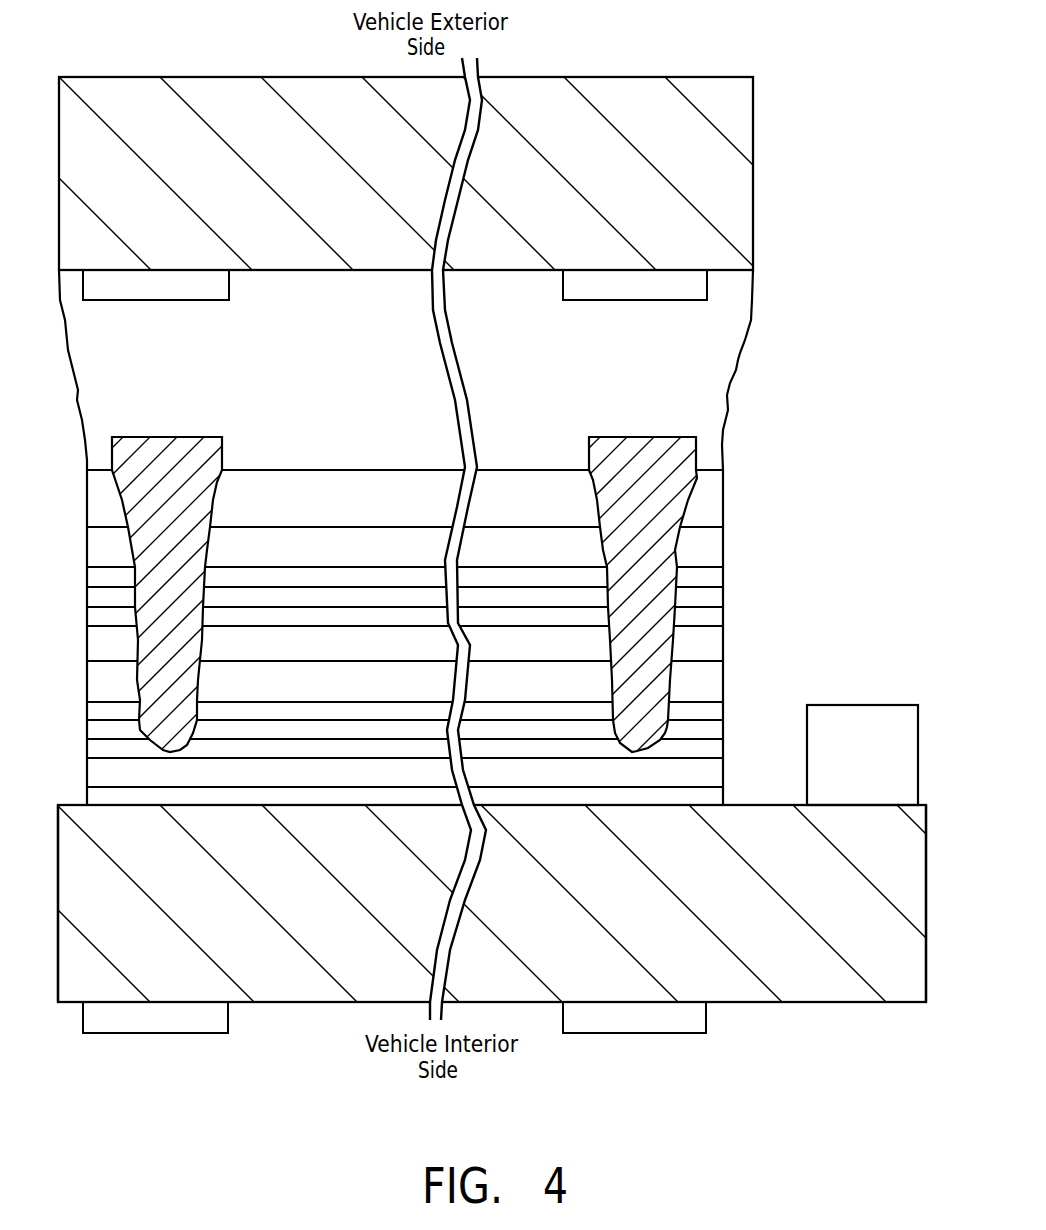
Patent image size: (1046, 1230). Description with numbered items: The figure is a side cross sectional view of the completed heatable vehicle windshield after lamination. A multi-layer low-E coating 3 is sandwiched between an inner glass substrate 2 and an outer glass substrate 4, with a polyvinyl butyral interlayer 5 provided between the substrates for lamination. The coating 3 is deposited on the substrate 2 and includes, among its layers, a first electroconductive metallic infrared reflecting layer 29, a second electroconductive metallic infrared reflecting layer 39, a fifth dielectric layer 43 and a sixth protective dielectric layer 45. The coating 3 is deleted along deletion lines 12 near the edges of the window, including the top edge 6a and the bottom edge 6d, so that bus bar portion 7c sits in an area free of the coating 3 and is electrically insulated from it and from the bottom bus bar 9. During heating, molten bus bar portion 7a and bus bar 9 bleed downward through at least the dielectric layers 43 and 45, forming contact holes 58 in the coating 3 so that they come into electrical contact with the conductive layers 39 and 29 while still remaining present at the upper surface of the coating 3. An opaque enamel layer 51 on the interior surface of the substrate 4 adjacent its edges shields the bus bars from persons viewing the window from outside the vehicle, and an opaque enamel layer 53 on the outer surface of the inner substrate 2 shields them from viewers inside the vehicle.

The glass substrate 2 is at (798, 975).
The multi-layer low-E coating 3 is at (419, 639).
The glass substrate 4 is at (745, 137).
The PVB interlayer 5 is at (718, 392).
The top side/edge 6a is at (57, 982).
The bottom side/edge 6d is at (920, 928).
The bus bar portion 7a is at (155, 452).
The bus bar portion 7c is at (878, 705).
The bottom bus bar 9 is at (670, 445).
The deletion lines 12 is at (85, 787).
The first electroconductive metallic infrared reflecting layer 29 is at (695, 730).
The second electroconductive metallic infrared reflecting layer 39 is at (517, 600).
The fifth dielectric layer 43 is at (263, 548).
The sixth protective dielectric layer 45 is at (250, 485).
The opaque enamel layer 51 is at (175, 299).
The opaque enamel layer 53 is at (165, 1032).
The contact holes 58 is at (688, 515).